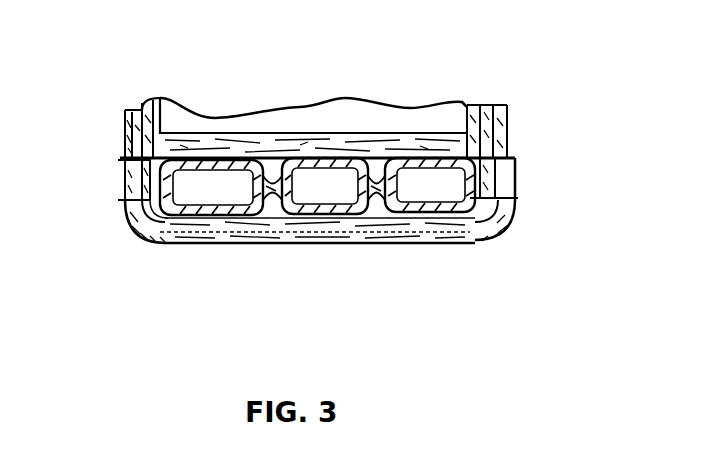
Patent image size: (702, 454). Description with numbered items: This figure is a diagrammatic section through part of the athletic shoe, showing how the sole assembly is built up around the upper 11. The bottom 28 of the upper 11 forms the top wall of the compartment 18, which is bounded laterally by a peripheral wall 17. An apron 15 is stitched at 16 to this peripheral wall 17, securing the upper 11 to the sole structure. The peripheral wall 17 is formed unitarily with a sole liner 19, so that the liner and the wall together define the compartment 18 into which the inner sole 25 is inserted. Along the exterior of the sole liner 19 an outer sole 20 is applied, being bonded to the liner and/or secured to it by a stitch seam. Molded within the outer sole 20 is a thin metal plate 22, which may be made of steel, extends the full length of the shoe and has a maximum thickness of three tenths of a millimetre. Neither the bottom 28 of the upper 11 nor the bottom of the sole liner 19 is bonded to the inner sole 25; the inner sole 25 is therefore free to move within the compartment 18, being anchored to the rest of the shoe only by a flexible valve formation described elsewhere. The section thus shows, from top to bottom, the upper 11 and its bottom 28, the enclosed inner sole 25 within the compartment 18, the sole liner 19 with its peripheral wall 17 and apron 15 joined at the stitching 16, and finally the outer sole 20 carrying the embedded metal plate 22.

The upper 11 is at (442, 92).
The apron 15 is at (510, 128).
The stitching 16 is at (137, 168).
The peripheral wall 17 is at (495, 172).
The compartment 18 is at (130, 190).
The sole liner 19 is at (318, 242).
The outer sole 20 is at (150, 244).
The metal plate 22 is at (440, 242).
The inner sole 25 is at (220, 243).
The bottom of the upper 28 is at (315, 148).